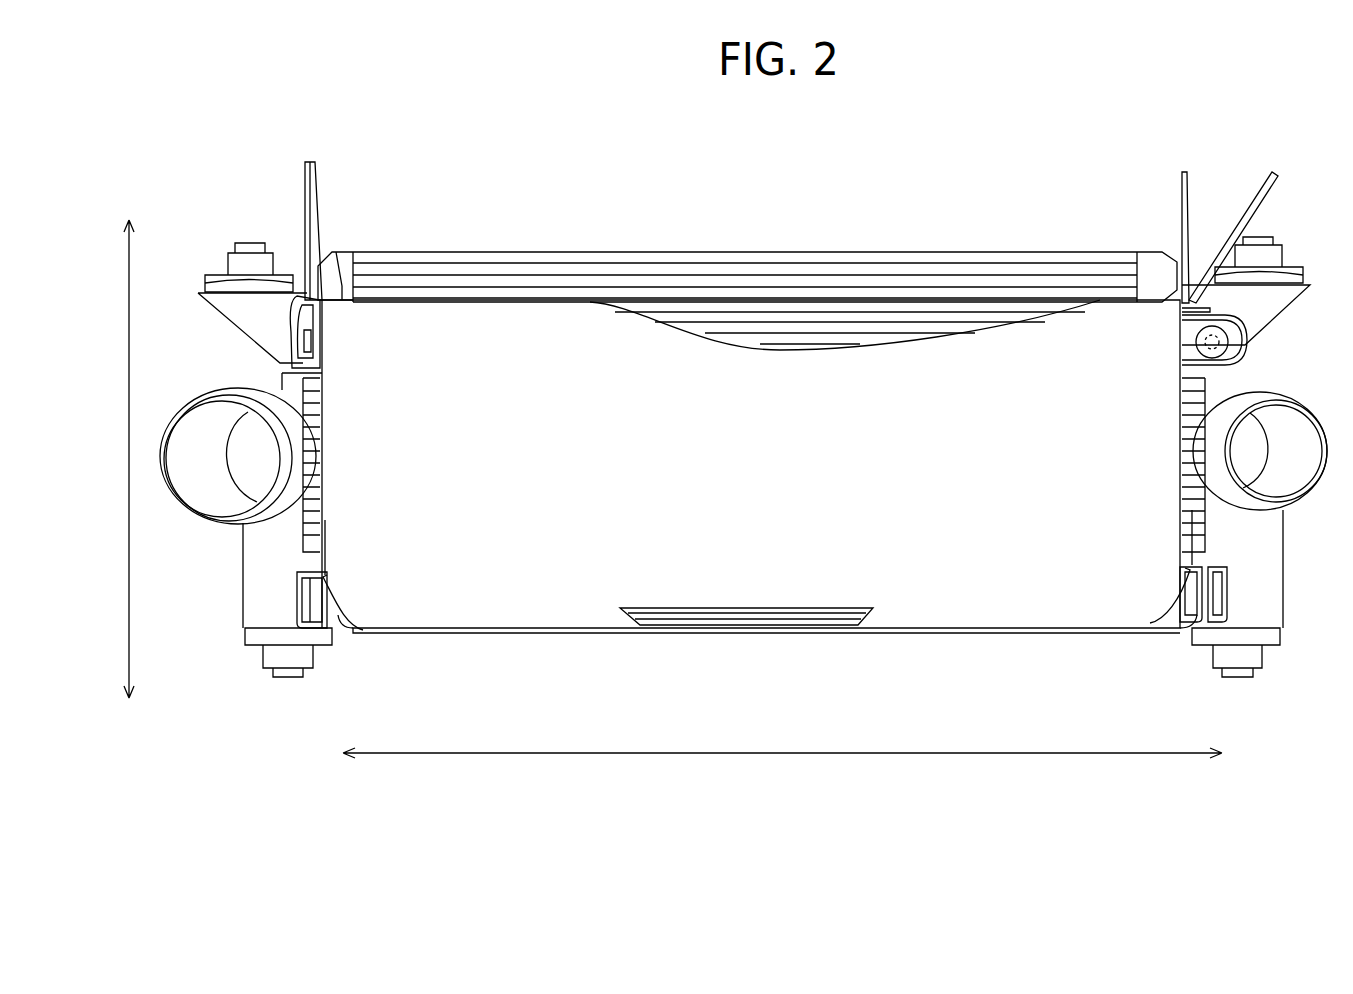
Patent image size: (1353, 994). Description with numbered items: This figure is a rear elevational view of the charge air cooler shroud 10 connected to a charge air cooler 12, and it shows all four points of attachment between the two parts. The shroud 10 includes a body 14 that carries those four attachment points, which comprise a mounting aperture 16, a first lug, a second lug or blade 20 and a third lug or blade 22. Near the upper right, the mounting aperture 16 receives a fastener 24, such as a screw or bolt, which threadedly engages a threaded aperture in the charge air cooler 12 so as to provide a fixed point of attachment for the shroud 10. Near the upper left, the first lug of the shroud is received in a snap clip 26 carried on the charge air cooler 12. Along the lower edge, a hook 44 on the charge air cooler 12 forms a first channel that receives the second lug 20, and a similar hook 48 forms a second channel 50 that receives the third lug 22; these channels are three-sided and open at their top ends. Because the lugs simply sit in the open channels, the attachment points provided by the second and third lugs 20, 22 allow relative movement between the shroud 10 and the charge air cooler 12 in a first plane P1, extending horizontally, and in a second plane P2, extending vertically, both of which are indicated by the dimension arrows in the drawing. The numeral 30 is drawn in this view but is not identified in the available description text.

The charge air cooler shroud 10 is at (315, 712).
The charge air cooler 12 is at (813, 270).
The body 14 is at (585, 582).
The mounting aperture 16 is at (1232, 358).
The second lug or blade 20 is at (333, 600).
The third lug or blade 22 is at (1192, 585).
The fastener 24 is at (1230, 338).
The snap clip 26 is at (240, 374).
The left retaining clip 30 is at (297, 325).
The hook 44 is at (300, 600).
The hook 48 is at (1220, 597).
The second channel 50 is at (1195, 585).
The first plane P1 is at (808, 753).
The second plane P2 is at (138, 541).